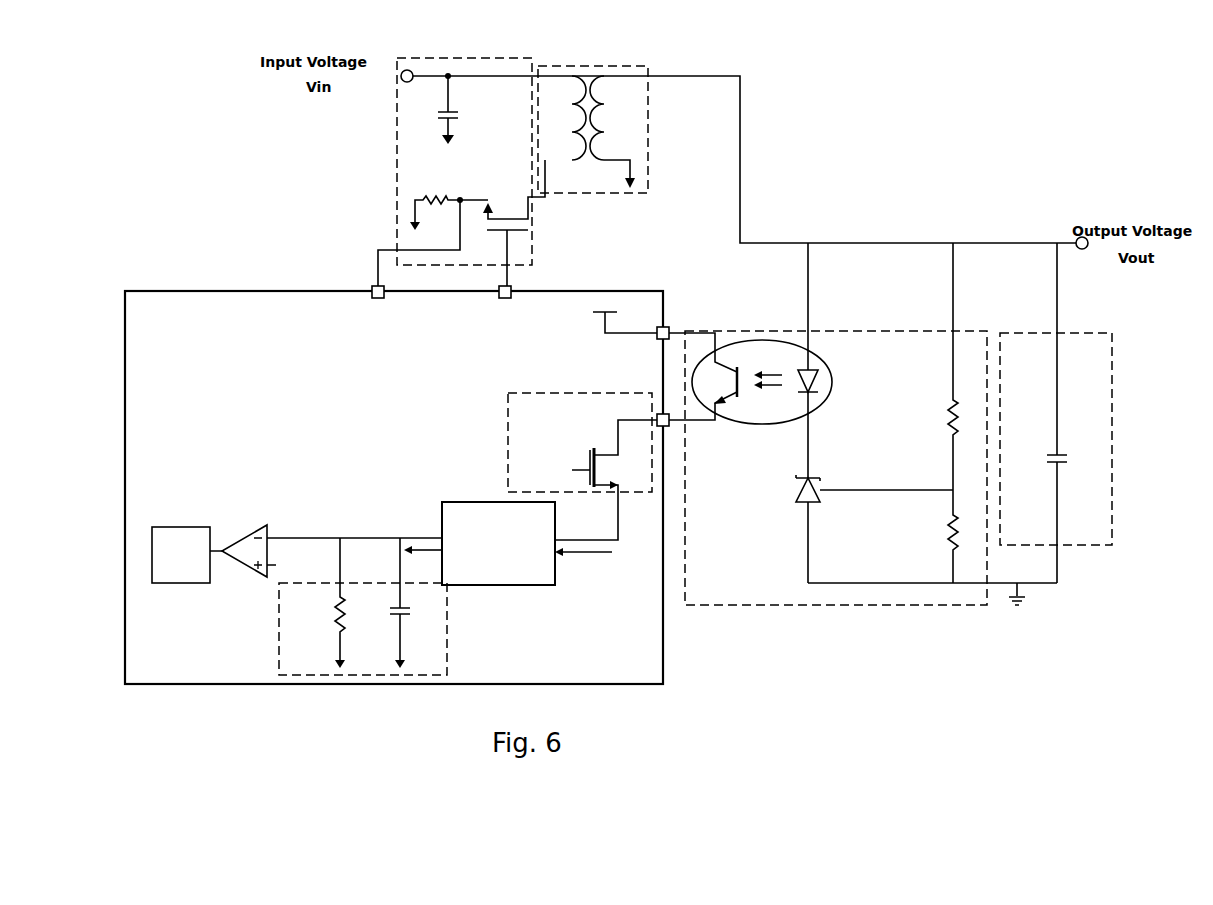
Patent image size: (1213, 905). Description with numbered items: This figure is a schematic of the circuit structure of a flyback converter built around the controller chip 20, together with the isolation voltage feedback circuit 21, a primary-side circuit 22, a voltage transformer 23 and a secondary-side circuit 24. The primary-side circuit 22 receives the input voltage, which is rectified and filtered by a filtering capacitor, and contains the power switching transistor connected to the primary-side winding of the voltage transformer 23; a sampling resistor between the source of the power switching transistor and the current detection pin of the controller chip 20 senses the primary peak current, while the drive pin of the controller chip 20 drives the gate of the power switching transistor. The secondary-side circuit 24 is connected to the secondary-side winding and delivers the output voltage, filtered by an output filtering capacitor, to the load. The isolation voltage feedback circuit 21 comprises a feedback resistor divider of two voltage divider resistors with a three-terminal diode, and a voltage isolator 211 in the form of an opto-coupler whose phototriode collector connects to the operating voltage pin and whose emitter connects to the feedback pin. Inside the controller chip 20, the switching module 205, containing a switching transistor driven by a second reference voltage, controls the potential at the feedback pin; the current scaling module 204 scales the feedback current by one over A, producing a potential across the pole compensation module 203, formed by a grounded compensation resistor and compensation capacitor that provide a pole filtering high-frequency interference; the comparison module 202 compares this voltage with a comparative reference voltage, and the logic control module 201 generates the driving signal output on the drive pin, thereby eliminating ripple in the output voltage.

The controller chip 20 is at (665, 667).
The isolation voltage feedback circuit 21 is at (828, 335).
The primary-side circuit 22 is at (487, 58).
The voltage transformer 23 is at (588, 66).
The secondary-side circuit 24 is at (1112, 383).
The logic control module 201 is at (166, 530).
The comparison module 202 is at (243, 537).
The pole compensation module 203 is at (283, 611).
The current scaling module 204 is at (517, 587).
The switching module 205 is at (508, 408).
The voltage isolator 211 is at (820, 383).